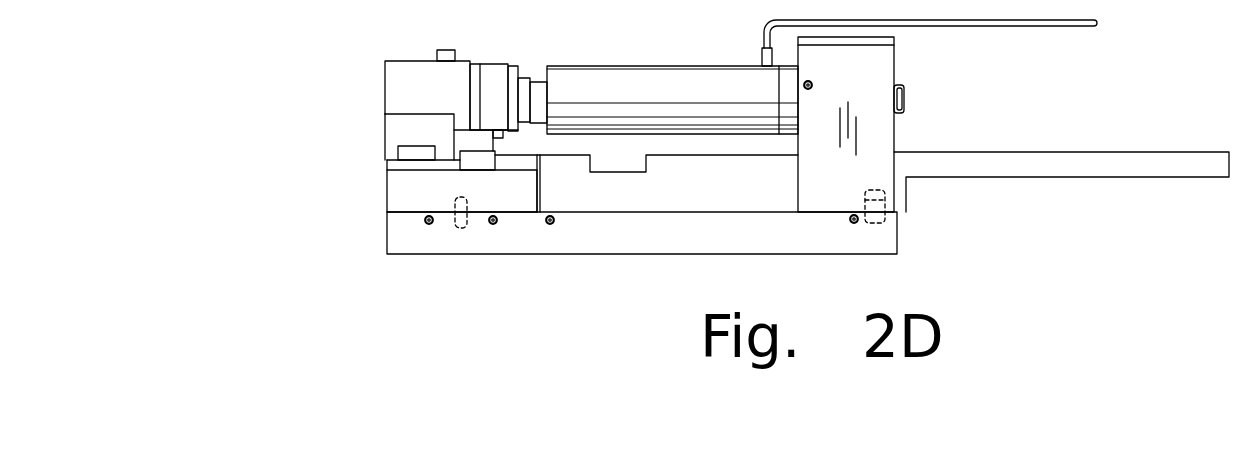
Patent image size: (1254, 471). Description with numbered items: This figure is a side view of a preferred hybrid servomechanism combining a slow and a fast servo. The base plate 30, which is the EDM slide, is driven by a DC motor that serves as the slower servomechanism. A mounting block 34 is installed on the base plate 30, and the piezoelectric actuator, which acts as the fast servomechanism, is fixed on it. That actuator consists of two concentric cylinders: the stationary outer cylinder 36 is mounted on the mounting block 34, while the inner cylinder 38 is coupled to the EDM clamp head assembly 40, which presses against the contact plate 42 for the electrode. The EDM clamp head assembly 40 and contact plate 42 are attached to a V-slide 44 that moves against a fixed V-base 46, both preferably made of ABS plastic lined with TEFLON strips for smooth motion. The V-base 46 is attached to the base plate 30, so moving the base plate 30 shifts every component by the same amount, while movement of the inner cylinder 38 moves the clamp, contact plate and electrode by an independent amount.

The base plate 30 is at (385, 232).
The mounting block 34 is at (895, 65).
The outer cylinder 36 is at (597, 67).
The inner cylinder 38 is at (542, 82).
The EDM clamp head assembly 40 is at (385, 77).
The contact plate 42 is at (385, 130).
The V-slide 44 is at (392, 165).
The V-base 46 is at (395, 184).